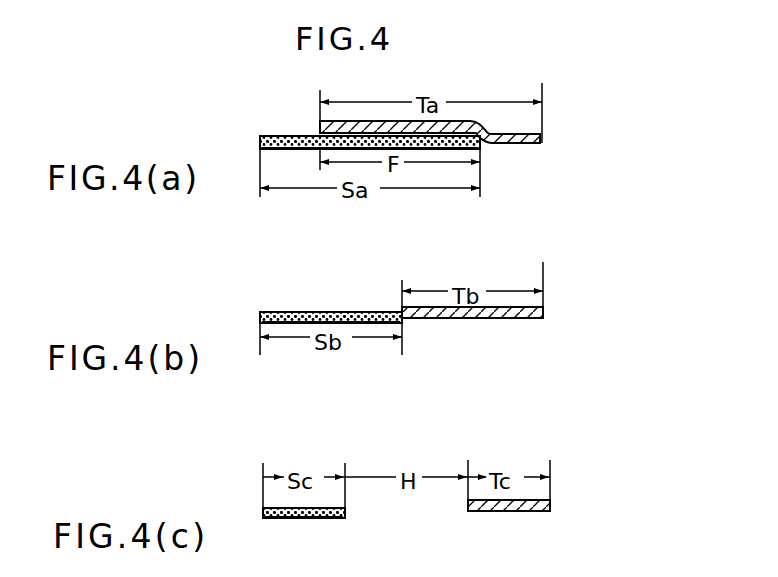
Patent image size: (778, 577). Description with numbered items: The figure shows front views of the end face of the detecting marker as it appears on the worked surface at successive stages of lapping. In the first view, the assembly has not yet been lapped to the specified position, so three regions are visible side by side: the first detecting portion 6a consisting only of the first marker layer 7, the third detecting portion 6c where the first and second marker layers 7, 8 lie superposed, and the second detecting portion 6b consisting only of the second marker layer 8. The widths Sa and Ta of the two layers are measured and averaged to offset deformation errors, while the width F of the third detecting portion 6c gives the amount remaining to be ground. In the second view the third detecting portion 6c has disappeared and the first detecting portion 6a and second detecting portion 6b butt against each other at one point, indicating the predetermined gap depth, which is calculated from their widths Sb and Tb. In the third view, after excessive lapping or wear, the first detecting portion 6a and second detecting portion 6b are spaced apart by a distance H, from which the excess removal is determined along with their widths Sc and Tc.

In FIG. 4A, the first detecting portion 6a is at (290, 136).
In FIG. 4B, the first detecting portion 6a is at (283, 312).
In FIG. 4C, the first detecting portion 6a is at (271, 508).
In FIG. 4A, the second detecting portion 6b is at (529, 144).
In FIG. 4B, the second detecting portion 6b is at (528, 319).
In FIG. 4C, the second detecting portion 6b is at (536, 512).
In FIG. 4A, the third detecting portion 6c is at (370, 122).
In FIG. 4A, the first marker layer 7 is at (312, 149).
In FIG. 4B, the first marker layer 7 is at (308, 323).
In FIG. 4C, the first marker layer 7 is at (296, 519).
In FIG. 4A, the second marker layer 8 is at (504, 135).
In FIG. 4B, the second marker layer 8 is at (511, 307).
In FIG. 4C, the second marker layer 8 is at (540, 500).